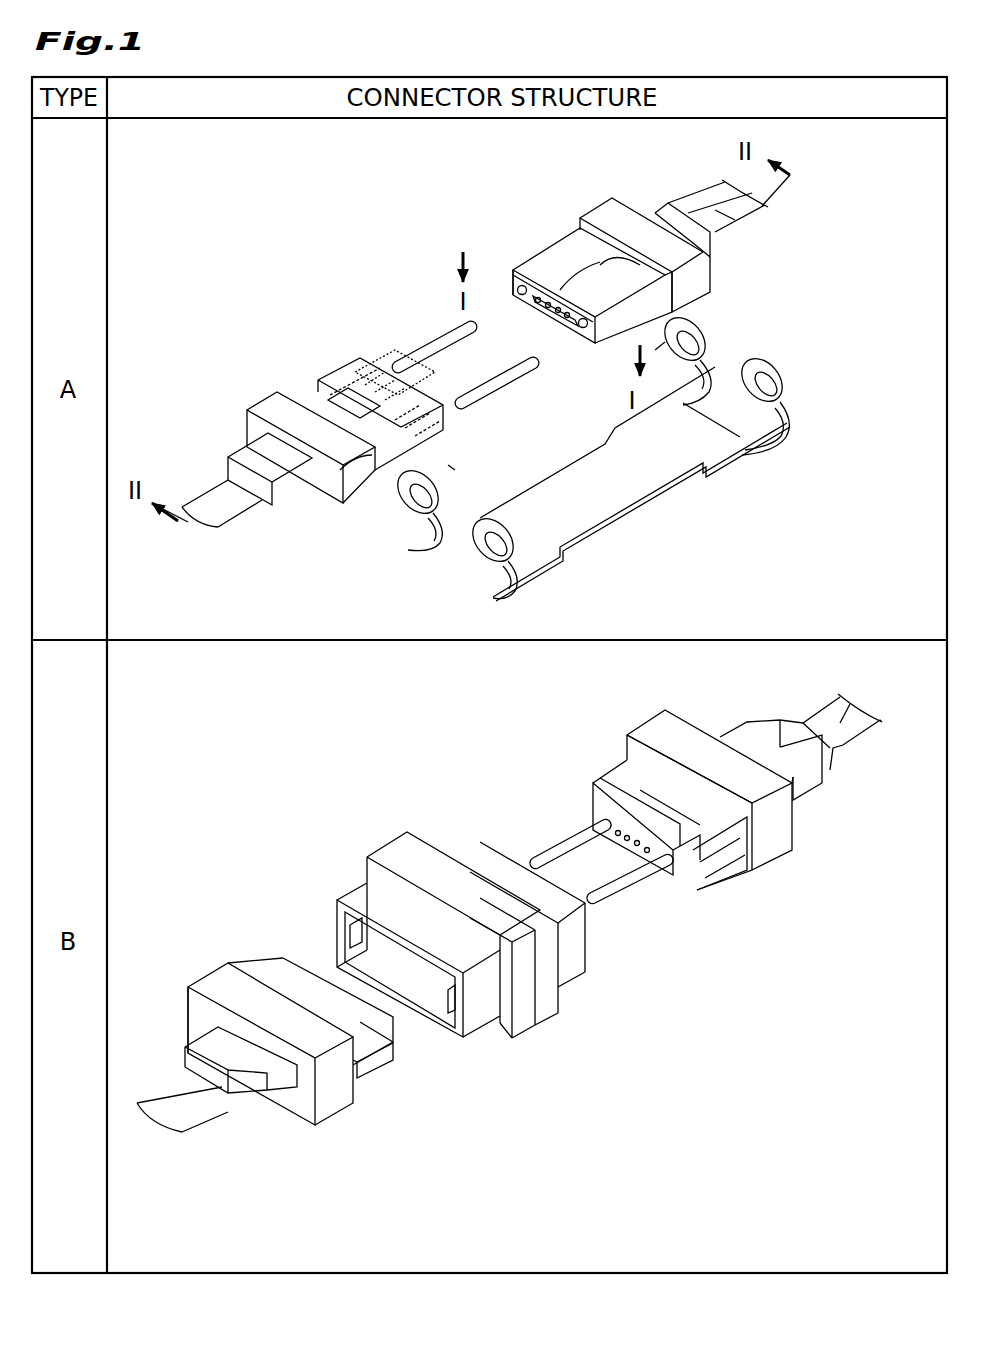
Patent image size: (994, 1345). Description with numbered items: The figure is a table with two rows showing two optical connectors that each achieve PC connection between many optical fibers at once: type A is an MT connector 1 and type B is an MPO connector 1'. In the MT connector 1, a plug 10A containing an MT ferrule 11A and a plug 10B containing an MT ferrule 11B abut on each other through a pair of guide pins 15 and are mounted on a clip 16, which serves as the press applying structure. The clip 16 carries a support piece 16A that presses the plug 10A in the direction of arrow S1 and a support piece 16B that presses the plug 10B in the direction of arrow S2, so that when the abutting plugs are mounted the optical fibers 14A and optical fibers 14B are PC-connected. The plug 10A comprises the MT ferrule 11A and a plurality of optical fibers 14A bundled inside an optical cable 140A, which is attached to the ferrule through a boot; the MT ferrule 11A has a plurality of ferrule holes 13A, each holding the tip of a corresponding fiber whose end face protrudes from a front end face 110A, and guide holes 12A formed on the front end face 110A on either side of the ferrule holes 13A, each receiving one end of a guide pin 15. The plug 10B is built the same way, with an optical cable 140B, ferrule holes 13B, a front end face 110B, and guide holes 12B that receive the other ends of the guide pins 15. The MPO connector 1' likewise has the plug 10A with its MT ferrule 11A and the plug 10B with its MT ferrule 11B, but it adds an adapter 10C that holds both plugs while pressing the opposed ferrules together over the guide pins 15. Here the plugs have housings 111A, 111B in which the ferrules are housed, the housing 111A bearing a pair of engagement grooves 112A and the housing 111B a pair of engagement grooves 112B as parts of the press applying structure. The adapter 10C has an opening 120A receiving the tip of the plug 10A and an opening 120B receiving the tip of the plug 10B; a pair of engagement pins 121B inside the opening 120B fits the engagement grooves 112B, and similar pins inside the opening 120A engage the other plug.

The MT connector 1 is at (255, 190).
The MPO connector 1' is at (232, 724).
The plug 10A is at (600, 150).
The plug 10B is at (338, 297).
The adapter 10C is at (622, 1030).
The MT ferrule 11A is at (558, 262).
The MT ferrule 11B is at (322, 392).
The guide holes 12A is at (518, 300).
The guide holes 12B is at (332, 390).
The ferrule holes 13A is at (577, 270).
The ferrule holes 13B is at (400, 383).
The optical fibers 14A is at (566, 300).
The optical fibers 14B is at (346, 476).
The guide pins 15 is at (446, 345).
The clip 16 is at (600, 516).
The support piece 16A is at (692, 348).
The support piece 16B is at (468, 570).
The front end face 110A is at (514, 284).
The front end face 110B is at (376, 365).
The housing 111A is at (777, 838).
The housing 111B is at (342, 1120).
The engagement grooves 112A is at (753, 846).
The engagement grooves 112B is at (368, 1074).
The opening 120A is at (594, 942).
The opening 120B is at (440, 1022).
The engagement pins 121B is at (340, 905).
The optical cable 140A is at (757, 226).
The optical cable 140B is at (248, 521).
The arrow S1 is at (660, 362).
The arrow S2 is at (453, 468).